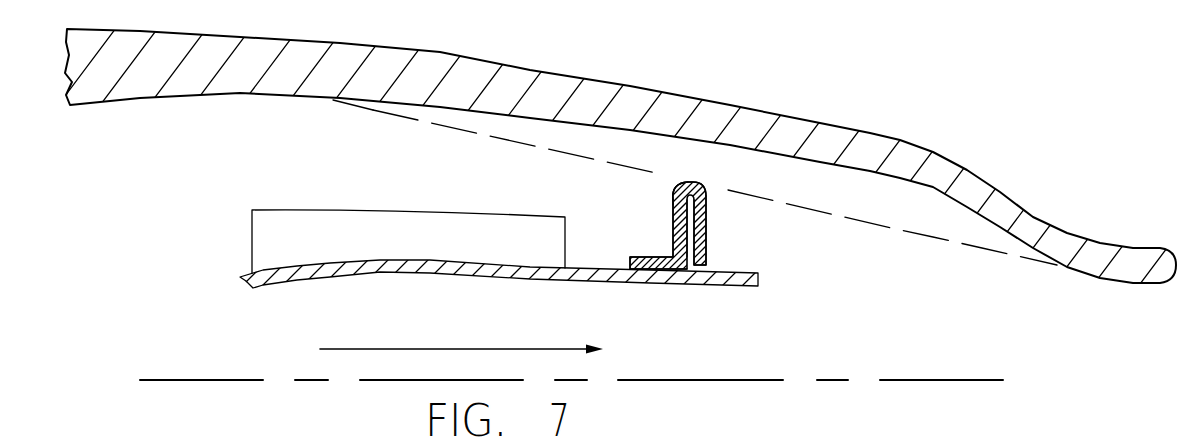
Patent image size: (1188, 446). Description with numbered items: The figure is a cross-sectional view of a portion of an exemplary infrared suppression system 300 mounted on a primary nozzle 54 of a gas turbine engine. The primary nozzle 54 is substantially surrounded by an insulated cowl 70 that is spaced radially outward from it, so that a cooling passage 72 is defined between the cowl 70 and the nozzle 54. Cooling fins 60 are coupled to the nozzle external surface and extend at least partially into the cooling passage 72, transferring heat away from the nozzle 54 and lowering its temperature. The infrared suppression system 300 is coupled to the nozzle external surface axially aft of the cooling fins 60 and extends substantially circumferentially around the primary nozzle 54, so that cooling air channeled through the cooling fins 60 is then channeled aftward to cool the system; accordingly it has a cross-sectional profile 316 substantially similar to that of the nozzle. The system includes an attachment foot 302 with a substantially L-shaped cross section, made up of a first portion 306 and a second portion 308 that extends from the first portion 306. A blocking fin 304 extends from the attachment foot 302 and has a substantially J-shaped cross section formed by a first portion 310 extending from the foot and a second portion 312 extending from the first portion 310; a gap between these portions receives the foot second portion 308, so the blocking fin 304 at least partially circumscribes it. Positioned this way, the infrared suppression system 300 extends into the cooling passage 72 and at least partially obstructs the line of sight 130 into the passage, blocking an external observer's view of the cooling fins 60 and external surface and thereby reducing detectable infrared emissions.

The insulated cowl 70 is at (570, 72).
The cooling passage 72 is at (441, 185).
The cooling fins 60 is at (397, 253).
The primary nozzle 54 is at (517, 283).
The attachment foot 302 is at (660, 270).
The blocking fin 304 is at (699, 190).
The first portion 306 is at (657, 258).
The second portion 308 is at (674, 237).
The first portion 310 is at (667, 193).
The second portion 312 is at (708, 227).
The cross-sectional profile 316 is at (785, 269).
The infrared suppression system 300 is at (853, 313).
The line of sight 130 is at (988, 250).